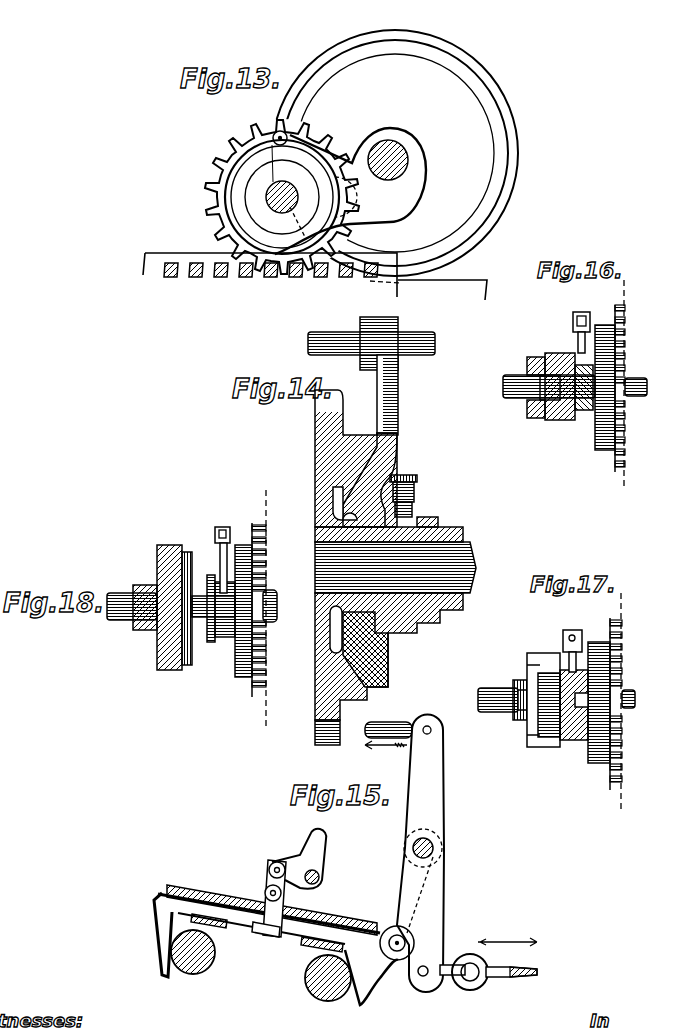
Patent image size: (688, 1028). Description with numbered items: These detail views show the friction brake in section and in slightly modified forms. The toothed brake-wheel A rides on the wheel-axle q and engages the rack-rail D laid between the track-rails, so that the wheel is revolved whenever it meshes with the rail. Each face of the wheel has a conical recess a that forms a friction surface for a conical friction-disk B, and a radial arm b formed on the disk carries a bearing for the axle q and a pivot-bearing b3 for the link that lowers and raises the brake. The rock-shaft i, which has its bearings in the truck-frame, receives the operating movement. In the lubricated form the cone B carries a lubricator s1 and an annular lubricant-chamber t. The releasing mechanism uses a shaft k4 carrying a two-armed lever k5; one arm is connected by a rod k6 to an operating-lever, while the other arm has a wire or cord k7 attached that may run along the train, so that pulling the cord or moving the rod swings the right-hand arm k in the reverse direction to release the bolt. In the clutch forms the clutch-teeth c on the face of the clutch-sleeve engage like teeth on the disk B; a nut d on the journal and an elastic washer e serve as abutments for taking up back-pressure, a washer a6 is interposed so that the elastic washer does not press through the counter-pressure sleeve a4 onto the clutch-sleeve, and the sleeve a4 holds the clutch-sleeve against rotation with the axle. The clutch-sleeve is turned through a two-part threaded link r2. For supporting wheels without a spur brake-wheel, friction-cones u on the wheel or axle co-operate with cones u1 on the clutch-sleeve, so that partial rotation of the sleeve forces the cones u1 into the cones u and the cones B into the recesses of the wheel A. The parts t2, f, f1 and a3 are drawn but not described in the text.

In FIG. 13, the toothed brake-wheel A is at (212, 178).
In FIG. 16, the toothed brake-wheel A is at (627, 360).
In FIG. 17, the toothed brake-wheel A is at (620, 740).
In FIG. 18, the toothed brake-wheel A is at (255, 688).
In FIG. 13, the conical friction-disk B is at (285, 191).
In FIG. 14, the conical friction-disk B is at (397, 458).
In FIG. 16, the conical friction-disk B is at (598, 442).
In FIG. 17, the conical friction-disk B is at (598, 762).
In FIG. 18, the conical friction-disk B is at (238, 660).
In FIG. 13, the conical recess a is at (272, 172).
In FIG. 13, the radial arm b is at (325, 191).
In FIG. 13, the pivot-bearing b3 is at (275, 135).
In FIG. 13, the wheel-axle q is at (388, 145).
In FIG. 14, the wheel-axle q is at (395, 567).
In FIG. 16, the wheel-axle q is at (503, 388).
In FIG. 13, the rack-rail D is at (171, 263).
In FIG. 14, the annular lubricant-chamber t is at (320, 525).
In FIG. 14, the pawl t2 is at (390, 650).
In FIG. 14, the lubricator s1 is at (418, 492).
In FIG. 15, the right-hand arm k is at (365, 983).
In FIG. 15, the shaft k4 is at (435, 848).
In FIG. 15, the two-armed lever k5 is at (433, 808).
In FIG. 15, the rod k6 is at (399, 728).
In FIG. 15, the wire or cord k7 is at (488, 971).
In FIG. 15, the roller f is at (200, 970).
In FIG. 15, the roller f1 is at (310, 978).
In FIG. 15, the rock-shaft i is at (265, 935).
In FIG. 16, the link r2 is at (582, 312).
In FIG. 17, the link r2 is at (575, 630).
In FIG. 18, the link r2 is at (224, 527).
In FIG. 16, the washer a6 is at (565, 352).
In FIG. 17, the counter-pressure sleeve a4 is at (555, 655).
In FIG. 17, the collar a3 is at (522, 680).
In FIG. 16, the nut d is at (530, 412).
In FIG. 16, the elastic washer e is at (550, 420).
In FIG. 17, the elastic washer e is at (542, 705).
In FIG. 16, the clutch-teeth c is at (574, 420).
In FIG. 17, the clutch-teeth c is at (575, 742).
In FIG. 18, the clutch-teeth c is at (216, 640).
In FIG. 18, the friction-cone u is at (160, 558).
In FIG. 18, the cone u1 is at (190, 568).